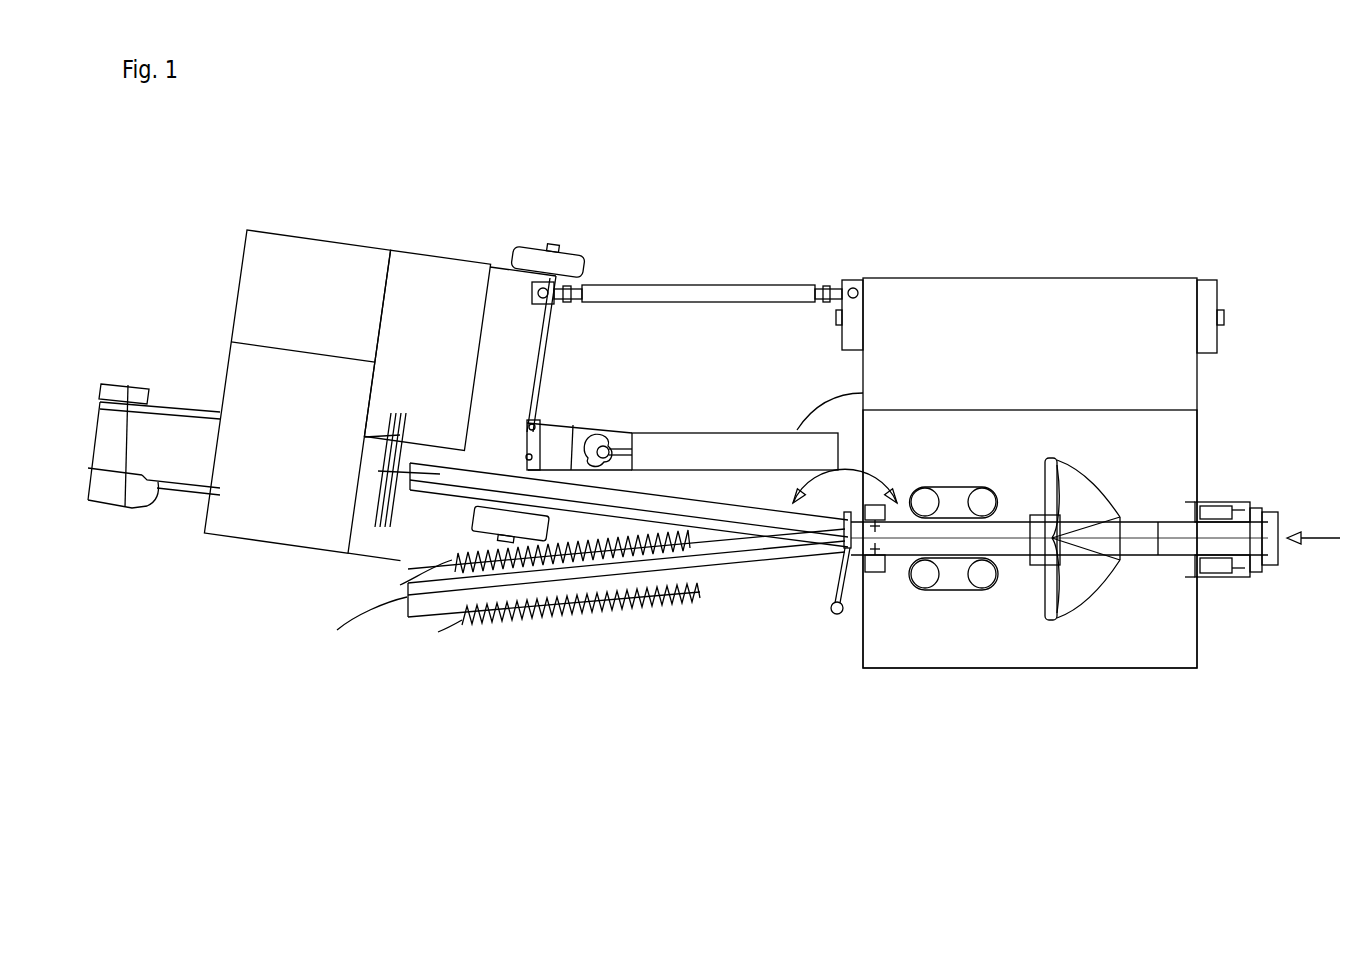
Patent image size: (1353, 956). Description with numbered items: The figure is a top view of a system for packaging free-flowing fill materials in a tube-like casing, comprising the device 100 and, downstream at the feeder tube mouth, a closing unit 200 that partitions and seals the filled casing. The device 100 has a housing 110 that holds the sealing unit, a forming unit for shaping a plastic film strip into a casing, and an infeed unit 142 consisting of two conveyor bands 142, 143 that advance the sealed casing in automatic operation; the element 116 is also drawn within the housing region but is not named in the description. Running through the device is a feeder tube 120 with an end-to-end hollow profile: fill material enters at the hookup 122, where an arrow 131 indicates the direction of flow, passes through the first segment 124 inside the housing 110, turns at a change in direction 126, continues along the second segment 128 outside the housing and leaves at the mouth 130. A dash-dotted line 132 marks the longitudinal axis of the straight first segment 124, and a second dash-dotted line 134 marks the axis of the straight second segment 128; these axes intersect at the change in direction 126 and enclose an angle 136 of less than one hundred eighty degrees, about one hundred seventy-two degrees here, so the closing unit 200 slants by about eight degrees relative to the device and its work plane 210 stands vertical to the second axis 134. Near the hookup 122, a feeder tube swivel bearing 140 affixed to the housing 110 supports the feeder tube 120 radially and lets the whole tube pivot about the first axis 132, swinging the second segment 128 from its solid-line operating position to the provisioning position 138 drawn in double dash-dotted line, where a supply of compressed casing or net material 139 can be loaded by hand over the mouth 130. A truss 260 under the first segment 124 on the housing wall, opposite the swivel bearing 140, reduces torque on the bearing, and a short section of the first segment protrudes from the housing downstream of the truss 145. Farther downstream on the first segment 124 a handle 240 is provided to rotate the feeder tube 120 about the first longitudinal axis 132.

The device 100 is at (1085, 264).
The housing 110 is at (1198, 394).
The conical winding element 116 is at (1082, 460).
The feeder tube 120 is at (1140, 560).
The hookup 122 is at (1158, 483).
The first segment 124 is at (1030, 515).
The change in direction 126 is at (898, 430).
The second segment 128 is at (672, 502).
The mouth 130 is at (408, 568).
The arrow 131 is at (1330, 540).
The dash-dotted line 132 is at (1105, 570).
The dash-dotted line 134 is at (572, 432).
The angle 136 is at (830, 472).
The provisioning position 138 is at (470, 642).
The casing or net material 139 is at (562, 615).
The feeder tube swivel bearing 140 is at (1222, 580).
The infeed unit / conveyor band 142 is at (958, 487).
The conveyor band 143 is at (955, 600).
The truss 145 is at (853, 605).
The closing unit 200 is at (457, 236).
The work plane 210 is at (392, 483).
The handle 240 is at (838, 598).
The truss 260 is at (892, 600).